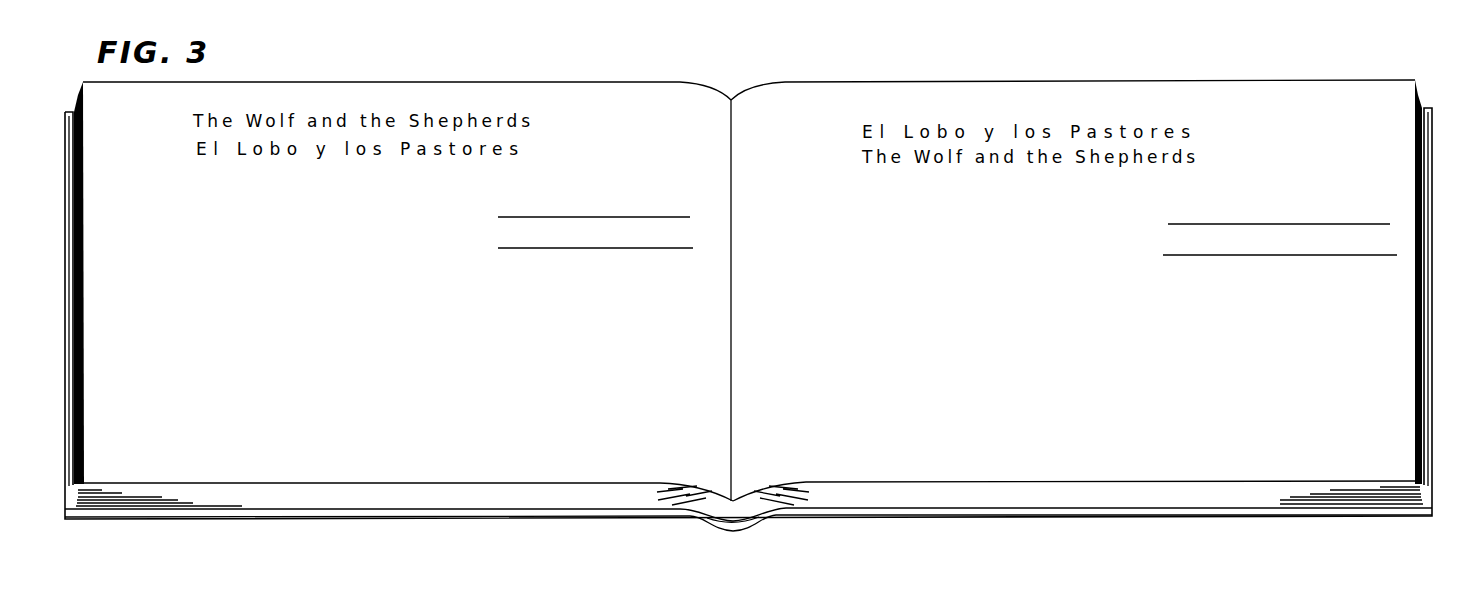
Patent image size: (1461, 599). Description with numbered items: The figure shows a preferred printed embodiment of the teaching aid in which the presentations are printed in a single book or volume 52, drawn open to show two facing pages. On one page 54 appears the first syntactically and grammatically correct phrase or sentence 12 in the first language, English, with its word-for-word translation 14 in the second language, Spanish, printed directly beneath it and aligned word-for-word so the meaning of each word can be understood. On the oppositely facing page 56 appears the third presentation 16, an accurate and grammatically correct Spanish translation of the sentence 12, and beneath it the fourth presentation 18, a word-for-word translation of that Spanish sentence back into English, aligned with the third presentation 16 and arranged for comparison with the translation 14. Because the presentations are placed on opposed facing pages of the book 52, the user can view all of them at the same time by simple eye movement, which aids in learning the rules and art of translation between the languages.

The first presentation 12 is at (105, 197).
The word-for-word translation 14 is at (107, 247).
The third presentation 16 is at (767, 205).
The fourth presentation 18 is at (767, 253).
The single book or volume 52 is at (737, 508).
The page 54 is at (247, 92).
The oppositely facing page 56 is at (1329, 90).